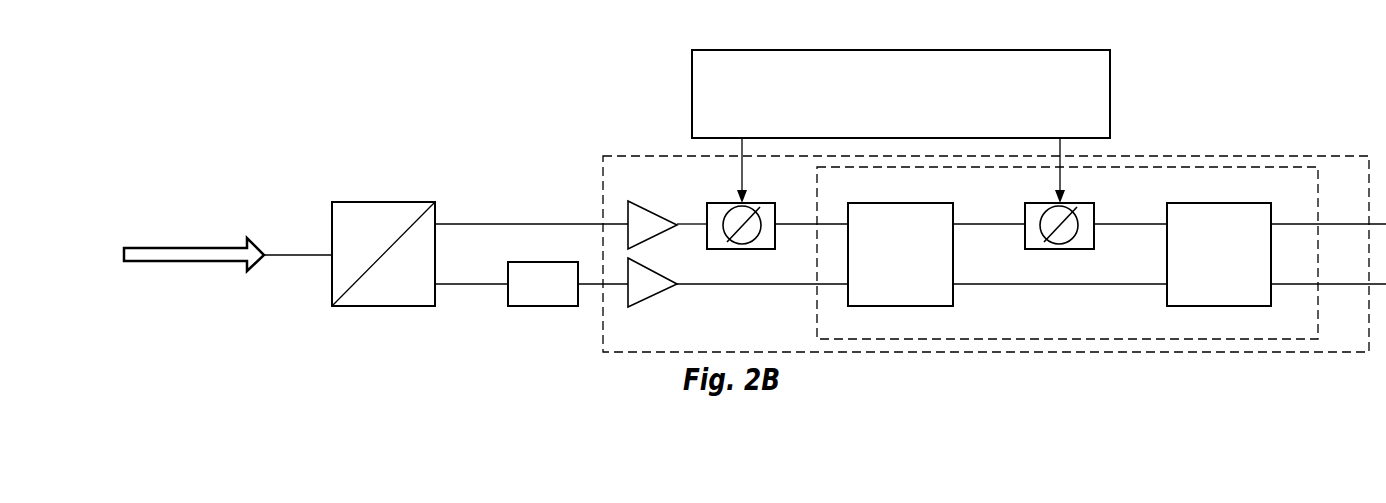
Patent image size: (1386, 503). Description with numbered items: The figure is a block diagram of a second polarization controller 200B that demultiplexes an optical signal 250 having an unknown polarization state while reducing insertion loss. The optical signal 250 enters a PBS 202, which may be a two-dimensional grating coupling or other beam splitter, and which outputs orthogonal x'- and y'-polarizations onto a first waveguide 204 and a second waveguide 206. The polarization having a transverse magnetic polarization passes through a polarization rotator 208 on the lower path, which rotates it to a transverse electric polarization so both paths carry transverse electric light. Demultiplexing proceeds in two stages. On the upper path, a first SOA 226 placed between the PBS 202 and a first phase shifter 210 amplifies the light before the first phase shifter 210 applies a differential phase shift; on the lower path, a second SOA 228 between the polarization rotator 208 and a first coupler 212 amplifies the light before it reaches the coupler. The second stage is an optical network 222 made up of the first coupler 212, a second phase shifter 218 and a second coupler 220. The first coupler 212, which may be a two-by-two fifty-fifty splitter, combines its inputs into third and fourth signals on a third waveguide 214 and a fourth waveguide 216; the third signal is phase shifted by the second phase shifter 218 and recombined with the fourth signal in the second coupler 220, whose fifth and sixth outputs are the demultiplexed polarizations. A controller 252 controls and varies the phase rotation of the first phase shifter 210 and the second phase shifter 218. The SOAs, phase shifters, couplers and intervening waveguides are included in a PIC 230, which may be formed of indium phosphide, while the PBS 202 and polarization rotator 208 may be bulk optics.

The second polarization controller 200B is at (225, 76).
The optical signal 250 is at (192, 247).
The PBS 202 is at (396, 202).
The first waveguide 204 is at (493, 223).
The second waveguide 206 is at (493, 285).
The polarization rotator 208 is at (510, 307).
The first semiconductor optical amplifier 226 is at (627, 215).
The second semiconductor optical amplifier 228 is at (627, 293).
The first phase shifter 210 is at (713, 203).
The first coupler 212 is at (882, 306).
The third waveguide 214 is at (1008, 223).
The fourth waveguide 216 is at (1008, 285).
The second phase shifter 218 is at (1087, 203).
The second coupler 220 is at (1200, 306).
The optical network 222 is at (1312, 193).
The PIC 230 is at (1363, 183).
The controller 252 is at (885, 116).